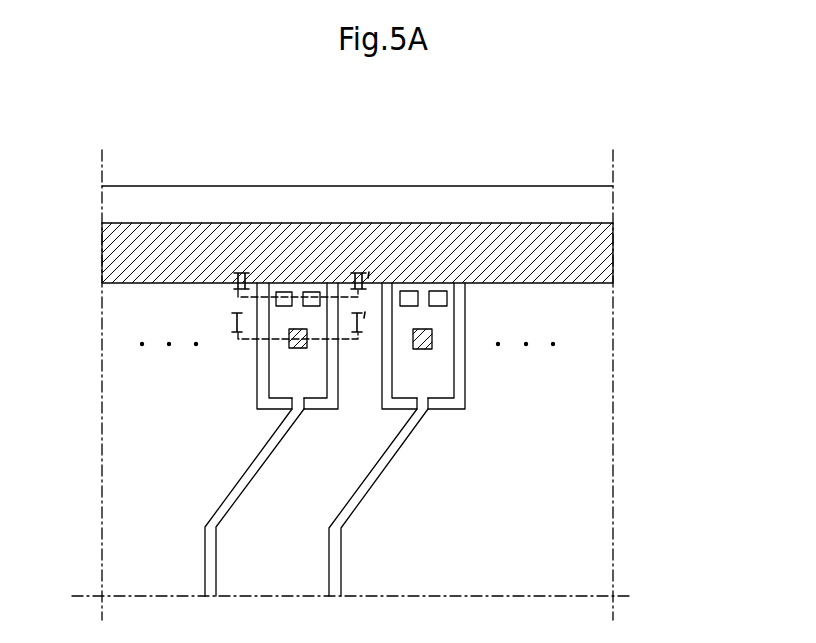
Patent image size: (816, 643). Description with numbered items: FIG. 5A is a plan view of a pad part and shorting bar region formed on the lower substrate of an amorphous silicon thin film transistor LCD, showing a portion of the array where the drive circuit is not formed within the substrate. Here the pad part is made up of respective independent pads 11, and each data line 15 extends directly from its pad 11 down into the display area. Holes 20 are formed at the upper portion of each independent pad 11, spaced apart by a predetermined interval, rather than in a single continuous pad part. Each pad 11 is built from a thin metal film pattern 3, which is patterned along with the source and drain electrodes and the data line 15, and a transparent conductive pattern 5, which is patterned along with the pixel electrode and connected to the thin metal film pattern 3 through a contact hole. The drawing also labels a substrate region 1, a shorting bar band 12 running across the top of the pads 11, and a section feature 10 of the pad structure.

The substrate 1 is at (227, 197).
The gate line 12 is at (588, 255).
The independent pad 11 is at (224, 320).
The transparent conductive pattern 5 is at (257, 403).
The thin metal film pattern 3 is at (269, 392).
The data line 15 is at (235, 488).
The hole 20 is at (284, 292).
The thin film transistor 10 is at (303, 349).